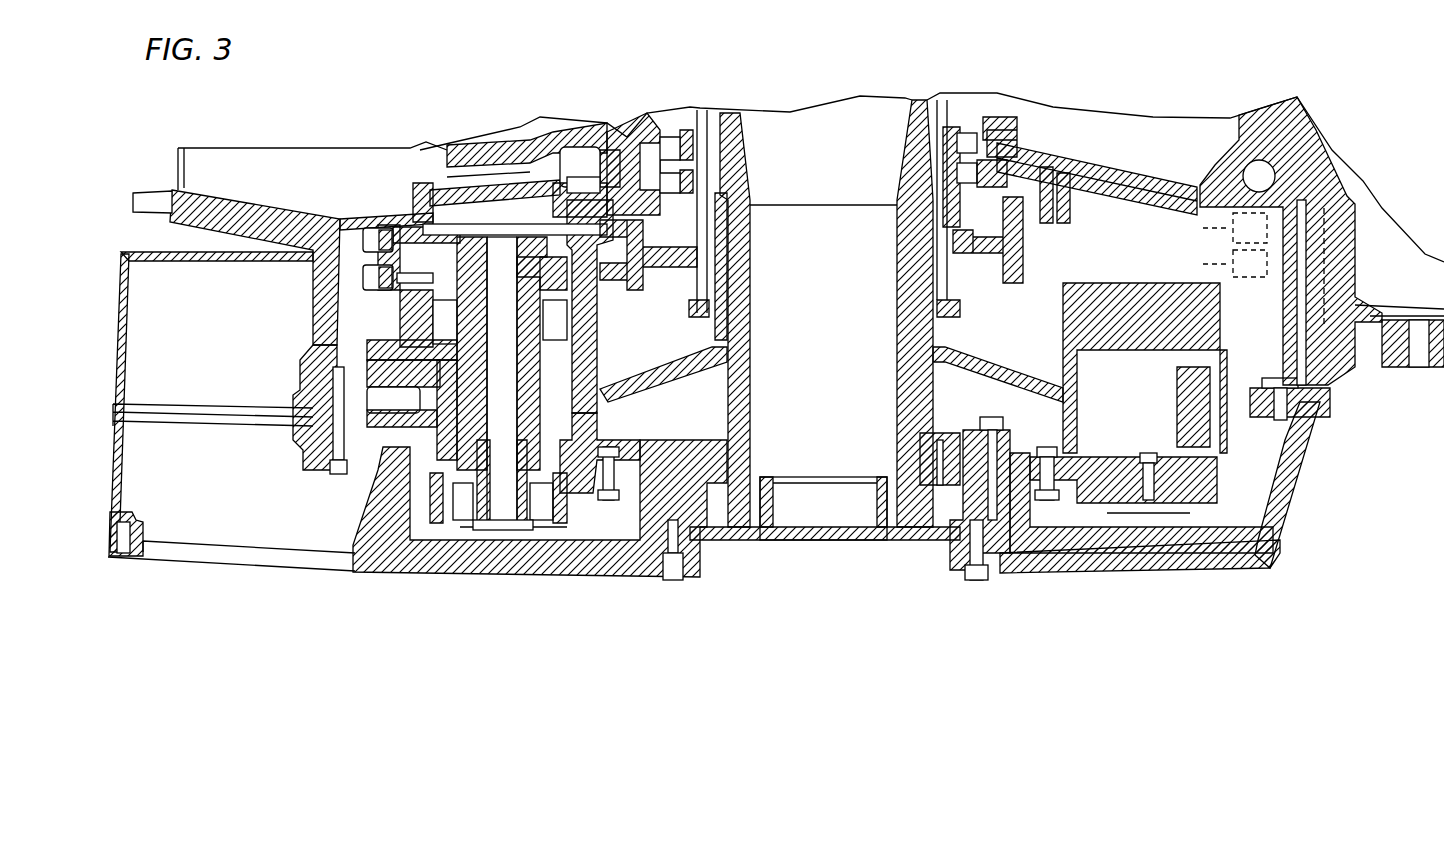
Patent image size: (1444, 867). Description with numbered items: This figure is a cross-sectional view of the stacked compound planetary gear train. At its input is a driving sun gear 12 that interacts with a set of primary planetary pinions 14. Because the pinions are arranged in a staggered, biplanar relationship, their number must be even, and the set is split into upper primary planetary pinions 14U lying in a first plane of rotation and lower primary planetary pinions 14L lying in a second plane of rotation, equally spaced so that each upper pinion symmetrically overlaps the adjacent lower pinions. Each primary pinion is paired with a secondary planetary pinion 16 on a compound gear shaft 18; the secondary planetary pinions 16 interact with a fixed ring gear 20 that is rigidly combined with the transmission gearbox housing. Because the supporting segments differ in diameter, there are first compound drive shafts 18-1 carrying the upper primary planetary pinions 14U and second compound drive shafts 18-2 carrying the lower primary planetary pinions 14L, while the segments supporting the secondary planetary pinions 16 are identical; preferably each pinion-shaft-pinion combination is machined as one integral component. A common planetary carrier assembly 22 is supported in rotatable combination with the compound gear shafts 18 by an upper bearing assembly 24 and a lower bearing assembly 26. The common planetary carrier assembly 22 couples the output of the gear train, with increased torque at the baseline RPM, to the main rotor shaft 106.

The driving sun gear 12 is at (990, 225).
The primary planetary pinions 14 is at (364, 173).
The upper primary planetary pinions 14U is at (360, 240).
The lower primary planetary pinions 14L is at (357, 273).
The secondary planetary pinions 16 is at (553, 330).
The compound gear shafts 18 is at (497, 446).
The first compound drive shafts 18-1 is at (490, 410).
The second compound drive shafts 18-2 is at (513, 393).
The fixed ring gear 20 is at (427, 448).
The common planetary carrier assembly 22 is at (630, 405).
The upper bearing assembly 24 is at (447, 323).
The lower bearing assembly 26 is at (462, 500).
The main rotor shaft 106 is at (905, 197).